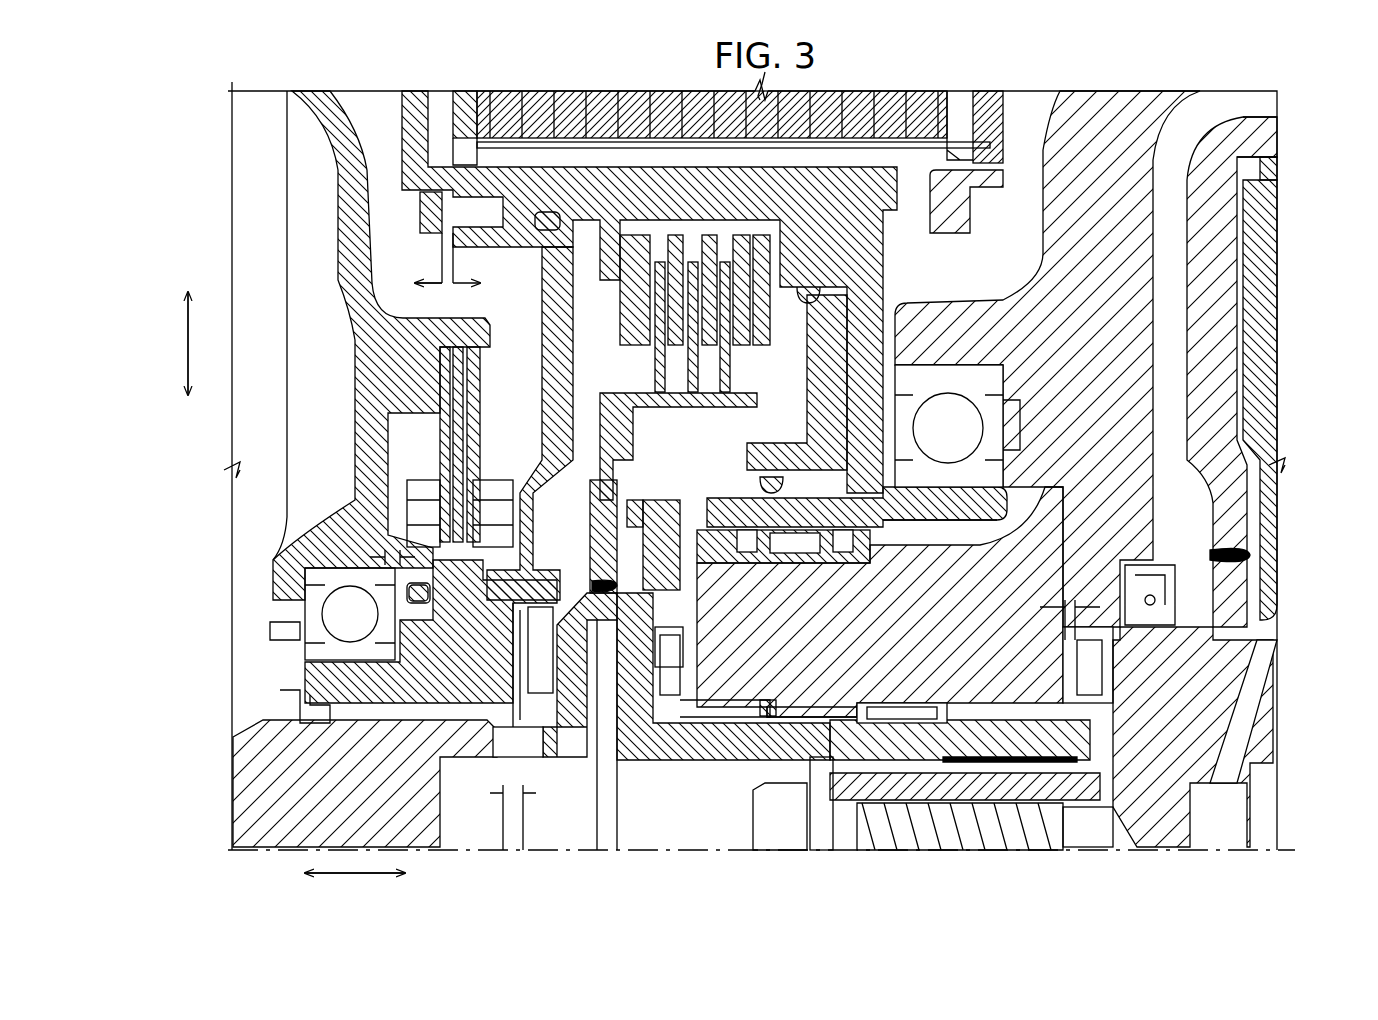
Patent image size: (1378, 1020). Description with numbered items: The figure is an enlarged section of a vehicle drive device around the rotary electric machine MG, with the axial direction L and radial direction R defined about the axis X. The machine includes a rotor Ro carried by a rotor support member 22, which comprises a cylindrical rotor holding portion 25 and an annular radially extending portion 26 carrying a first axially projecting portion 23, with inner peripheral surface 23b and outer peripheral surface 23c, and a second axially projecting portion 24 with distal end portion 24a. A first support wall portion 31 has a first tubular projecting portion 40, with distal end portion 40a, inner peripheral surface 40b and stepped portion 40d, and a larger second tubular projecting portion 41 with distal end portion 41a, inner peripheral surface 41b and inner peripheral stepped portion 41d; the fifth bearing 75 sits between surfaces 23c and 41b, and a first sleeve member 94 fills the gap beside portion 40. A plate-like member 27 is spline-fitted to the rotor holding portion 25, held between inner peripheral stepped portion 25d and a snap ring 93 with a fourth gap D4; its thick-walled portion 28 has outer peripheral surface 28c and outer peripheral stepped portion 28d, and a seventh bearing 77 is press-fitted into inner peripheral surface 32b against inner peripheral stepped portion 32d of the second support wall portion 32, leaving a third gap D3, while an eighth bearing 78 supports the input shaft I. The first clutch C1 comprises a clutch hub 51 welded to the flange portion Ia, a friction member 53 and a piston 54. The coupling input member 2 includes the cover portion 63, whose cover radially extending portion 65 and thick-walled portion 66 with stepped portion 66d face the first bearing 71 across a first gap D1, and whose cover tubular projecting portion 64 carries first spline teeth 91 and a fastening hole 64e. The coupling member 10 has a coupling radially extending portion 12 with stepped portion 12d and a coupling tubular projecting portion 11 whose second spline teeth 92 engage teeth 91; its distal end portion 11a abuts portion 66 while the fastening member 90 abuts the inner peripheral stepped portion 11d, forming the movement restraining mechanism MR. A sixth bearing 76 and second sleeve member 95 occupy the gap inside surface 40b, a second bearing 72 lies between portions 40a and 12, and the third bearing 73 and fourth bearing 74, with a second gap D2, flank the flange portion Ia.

The coupling input member 2 is at (1282, 96).
The coupling member 10 is at (677, 757).
The coupling tubular projecting portion 11 is at (703, 755).
The distal end portion 11a is at (1113, 815).
The inner peripheral stepped portion 11d is at (785, 717).
The coupling radially extending portion 12 is at (678, 568).
The stepped portion 12d is at (685, 645).
The rotor support member 22 is at (885, 276).
The first axially projecting portion 23 is at (945, 522).
The inner peripheral surface 23b is at (990, 505).
The outer peripheral surface 23c is at (990, 470).
The second axially projecting portion 24 is at (728, 500).
The distal end portion 24a is at (622, 500).
The rotor holding portion 25 is at (590, 230).
The inner peripheral stepped portion 25d is at (545, 232).
The radially extending portion 26 is at (885, 293).
The plate-like member 27 is at (545, 428).
The thick-walled portion 28 is at (397, 695).
The outer peripheral surface 28c is at (290, 668).
The outer peripheral stepped portion 28d is at (398, 653).
The first support wall portion 31 is at (1155, 268).
The second support wall portion 32 is at (360, 213).
The inner peripheral surface 32b is at (320, 565).
The inner peripheral stepped portion 32d is at (335, 592).
The first tubular projecting portion 40 is at (722, 502).
The distal end portion 40a is at (695, 600).
The inner peripheral surface 40b is at (815, 700).
The stepped portion 40d is at (1130, 605).
The second tubular projecting portion 41 is at (975, 300).
The distal end portion 41a is at (897, 337).
The inner peripheral surface 41b is at (990, 365).
The inner peripheral stepped portion 41d is at (1000, 380).
The clutch hub 51 is at (610, 457).
The friction member 53 is at (625, 345).
The piston 54 is at (810, 393).
The cover portion 63 is at (1262, 140).
The cover tubular projecting portion 64 is at (970, 847).
The fastening hole 64e is at (915, 845).
The cover radially extending portion 65 is at (1237, 510).
The thick-walled portion 66 is at (1222, 687).
The stepped portion 66d is at (1118, 697).
The first bearing 71 is at (1100, 675).
The second bearing 72 is at (682, 672).
The third bearing 73 is at (613, 755).
The fourth bearing 74 is at (533, 670).
The fifth bearing 75 is at (1005, 440).
The sixth bearing 76 is at (890, 705).
The seventh bearing 77 is at (285, 628).
The eighth bearing 78 is at (445, 732).
The fastening member 90 is at (778, 838).
The first spline teeth 91 is at (1020, 720).
The second spline teeth 92 is at (900, 752).
The snap ring 93 is at (420, 232).
The first sleeve member 94 is at (837, 567).
The second sleeve member 95 is at (768, 700).
The rotary electric machine MG is at (395, 133).
The rotor Ro is at (1265, 172).
The movement restraining mechanism MR is at (838, 852).
The first clutch C1 is at (617, 343).
The flange portion Ia is at (573, 620).
The input shaft I is at (232, 781).
The axis X is at (1230, 852).
The radial direction R is at (192, 339).
The axial direction L is at (354, 868).
The first gap D1 is at (1070, 603).
The second gap D2 is at (513, 817).
The third gap D3 is at (385, 555).
The fourth gap D4 is at (447, 296).